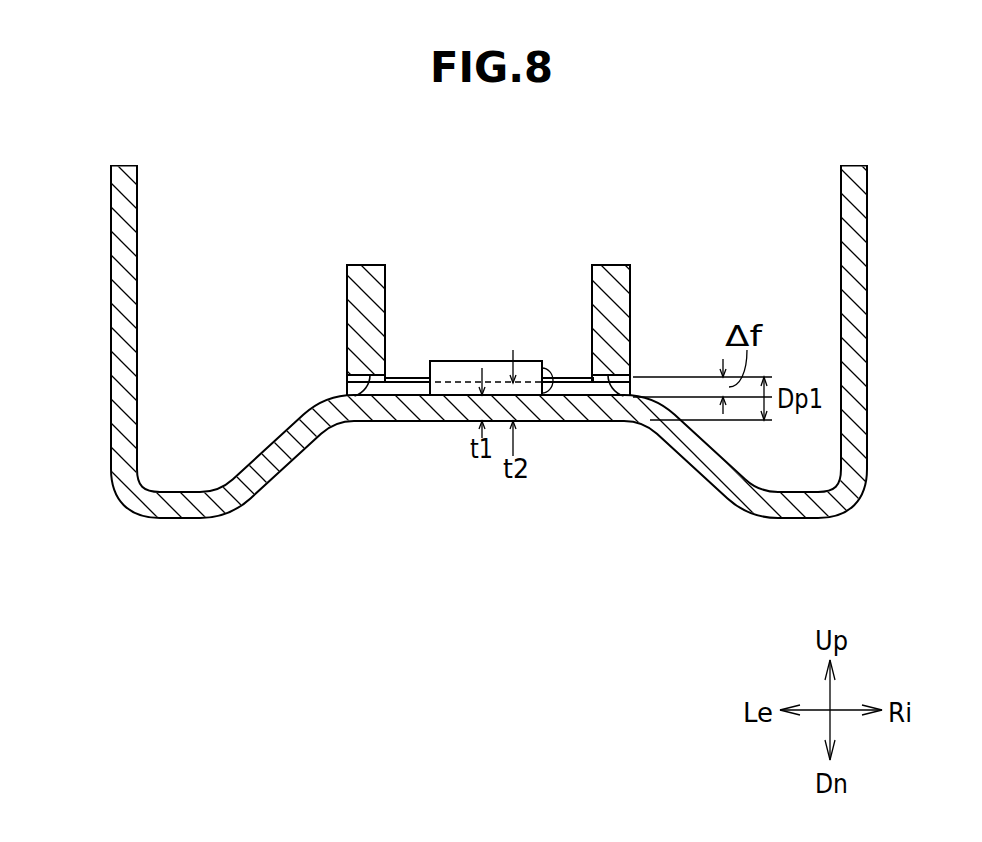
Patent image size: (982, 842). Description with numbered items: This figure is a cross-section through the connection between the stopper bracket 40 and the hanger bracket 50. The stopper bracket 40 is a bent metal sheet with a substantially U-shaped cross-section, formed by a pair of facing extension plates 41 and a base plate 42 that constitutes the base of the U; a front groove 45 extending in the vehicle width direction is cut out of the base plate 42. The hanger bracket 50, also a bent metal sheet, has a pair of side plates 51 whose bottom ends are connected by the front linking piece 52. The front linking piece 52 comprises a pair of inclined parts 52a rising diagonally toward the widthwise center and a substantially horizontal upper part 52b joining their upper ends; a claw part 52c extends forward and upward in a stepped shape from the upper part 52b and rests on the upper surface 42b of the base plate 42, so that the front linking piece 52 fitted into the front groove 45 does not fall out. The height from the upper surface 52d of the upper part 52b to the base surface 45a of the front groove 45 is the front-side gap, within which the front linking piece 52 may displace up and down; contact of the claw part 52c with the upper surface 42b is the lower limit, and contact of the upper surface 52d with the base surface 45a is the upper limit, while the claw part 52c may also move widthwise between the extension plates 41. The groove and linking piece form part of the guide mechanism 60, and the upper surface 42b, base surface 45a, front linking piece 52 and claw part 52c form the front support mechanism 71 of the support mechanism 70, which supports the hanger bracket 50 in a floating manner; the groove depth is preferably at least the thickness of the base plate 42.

The stopper bracket 40 is at (492, 328).
The extension plates 41 is at (366, 263).
The base plate 42 is at (489, 291).
The upper surface of the base plate 42b is at (576, 382).
The front groove 45 is at (492, 419).
The base surface of the front groove 45a is at (348, 384).
The hanger bracket 50 is at (488, 356).
The side plates 51 is at (111, 299).
The front linking piece 52 is at (489, 528).
The inclined parts 52a is at (265, 470).
The upper part 52b is at (489, 500).
The claw part 52c is at (488, 364).
The upper surface of the upper part 52d is at (560, 398).
The guide mechanism 60 is at (381, 438).
The support mechanism 70 is at (486, 325).
The front support mechanism 71 is at (453, 357).